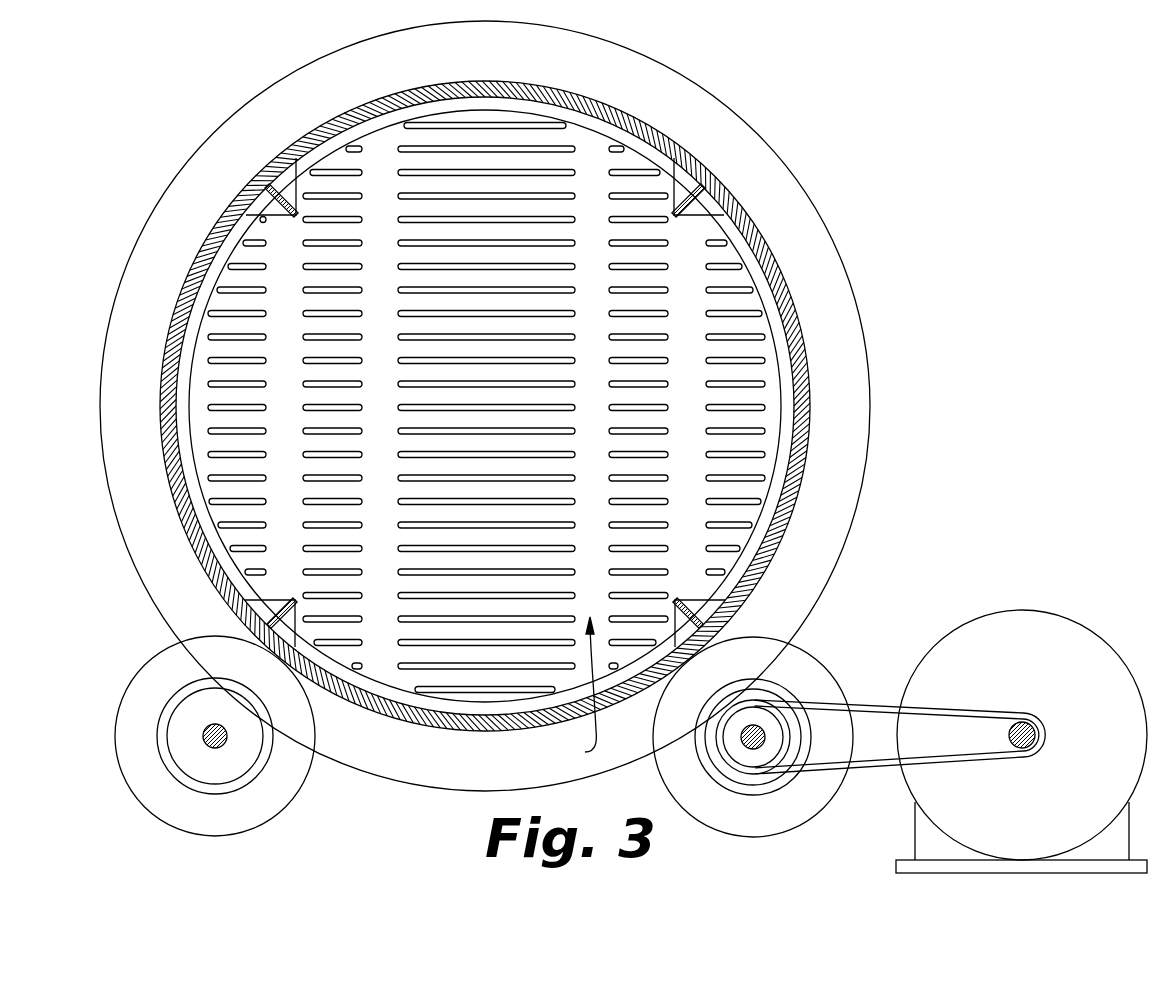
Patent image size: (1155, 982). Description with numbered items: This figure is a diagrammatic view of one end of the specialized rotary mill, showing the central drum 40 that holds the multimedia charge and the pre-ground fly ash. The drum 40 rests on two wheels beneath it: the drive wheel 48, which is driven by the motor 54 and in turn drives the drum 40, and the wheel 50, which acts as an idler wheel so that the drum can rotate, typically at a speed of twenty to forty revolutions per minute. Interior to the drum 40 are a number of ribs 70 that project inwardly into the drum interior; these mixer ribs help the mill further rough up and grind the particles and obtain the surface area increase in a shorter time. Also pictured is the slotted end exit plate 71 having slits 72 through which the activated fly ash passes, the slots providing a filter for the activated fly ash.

The central drum 40 is at (628, 116).
The drive wheel 48 is at (817, 653).
The idler wheel 50 is at (310, 771).
The motor 54 is at (1035, 609).
The ribs 70 is at (291, 158).
The slotted end exit plate 71 is at (585, 752).
The slits 72 is at (560, 387).